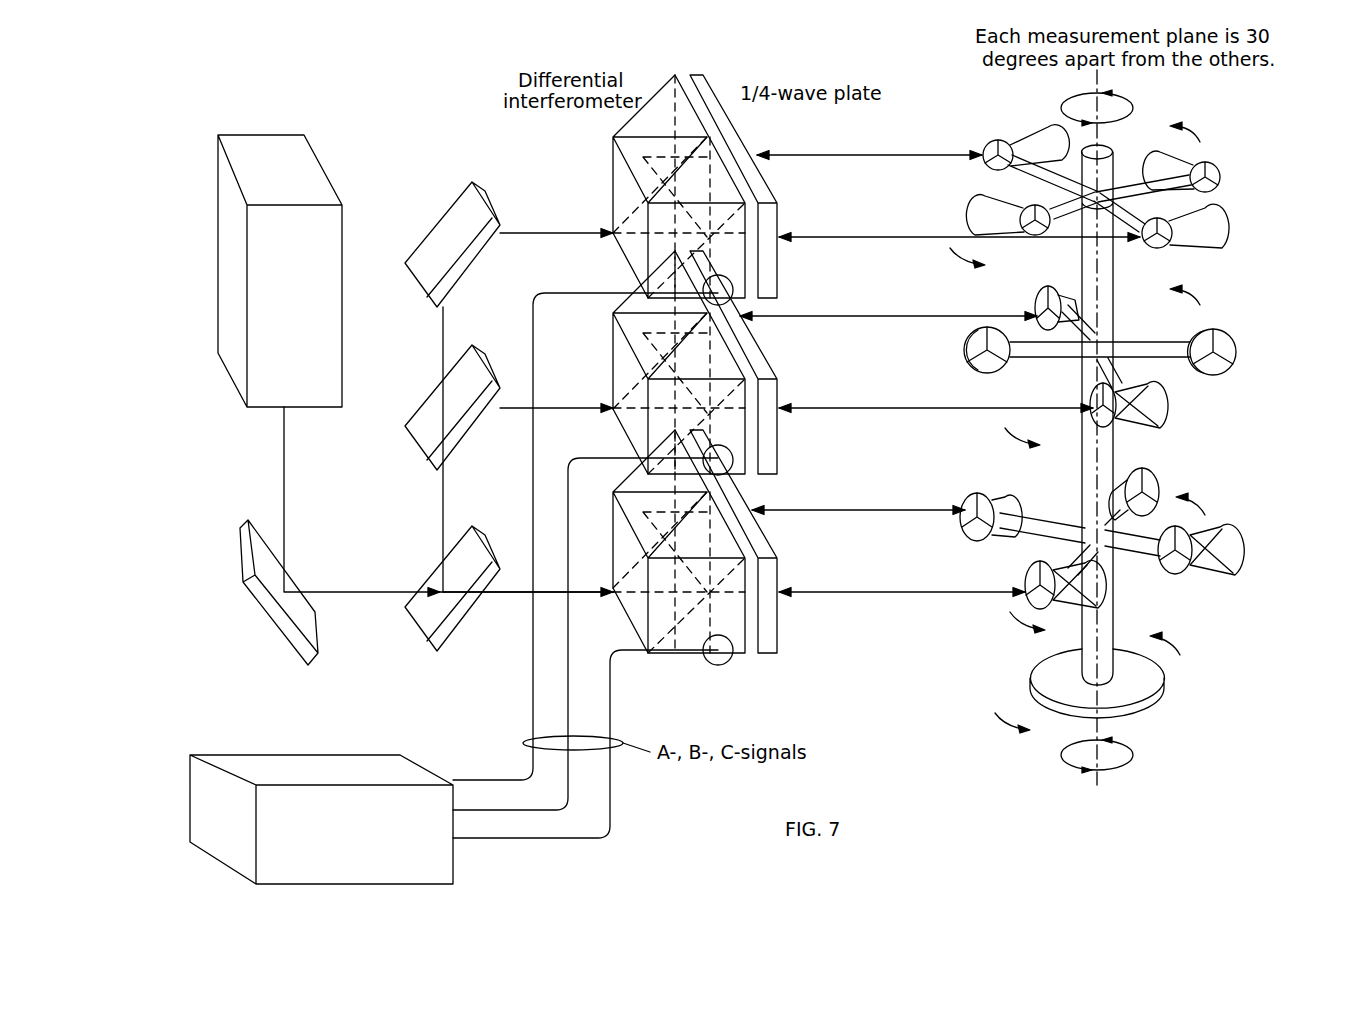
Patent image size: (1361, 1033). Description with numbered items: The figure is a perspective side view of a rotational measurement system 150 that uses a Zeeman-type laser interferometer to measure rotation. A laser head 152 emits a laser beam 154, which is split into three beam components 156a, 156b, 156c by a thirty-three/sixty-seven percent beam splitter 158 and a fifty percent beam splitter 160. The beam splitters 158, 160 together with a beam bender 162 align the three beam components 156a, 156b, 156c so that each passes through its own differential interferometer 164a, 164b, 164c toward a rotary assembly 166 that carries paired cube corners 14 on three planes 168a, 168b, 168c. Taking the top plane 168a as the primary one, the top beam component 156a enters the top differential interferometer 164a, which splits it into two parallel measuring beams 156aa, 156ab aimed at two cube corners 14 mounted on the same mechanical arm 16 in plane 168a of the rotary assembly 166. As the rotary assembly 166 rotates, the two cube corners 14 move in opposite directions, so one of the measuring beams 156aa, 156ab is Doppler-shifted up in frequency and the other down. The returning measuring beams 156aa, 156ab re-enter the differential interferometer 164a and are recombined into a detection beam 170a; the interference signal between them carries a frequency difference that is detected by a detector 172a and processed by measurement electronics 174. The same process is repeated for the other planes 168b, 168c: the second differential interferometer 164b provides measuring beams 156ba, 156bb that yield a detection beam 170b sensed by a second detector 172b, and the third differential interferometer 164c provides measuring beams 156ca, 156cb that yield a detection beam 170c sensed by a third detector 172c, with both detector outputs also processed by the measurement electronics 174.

The cube corner 14 is at (1210, 160).
The mechanical arm 16 is at (1131, 185).
The rotational measurement system 150 is at (1222, 818).
The laser head 152 is at (308, 310).
The laser beam 154 is at (283, 464).
The beam component 156a is at (592, 234).
The measuring beam 156aa is at (851, 157).
The measuring beam 156ab is at (850, 235).
The beam component 156b is at (592, 409).
The measuring beam 156ba is at (851, 318).
The measuring beam 156bb is at (850, 406).
The beam component 156c is at (513, 593).
The measuring beam 156ca is at (851, 512).
The measuring beam 156cb is at (850, 590).
The 33/67% beam splitter 158 is at (484, 566).
The 50% beam splitter 160 is at (466, 411).
The beam bender 162 is at (460, 249).
The differential interferometer 164a is at (610, 181).
The differential interferometer 164b is at (642, 362).
The differential interferometer 164c is at (741, 552).
The rotary assembly 166 is at (1147, 695).
The plane 168a is at (1137, 189).
The plane 168b is at (1245, 395).
The plane 168c is at (1243, 520).
The detection beam 170a is at (705, 264).
The detection beam 170b is at (720, 249).
The detection beam 170c is at (701, 562).
The detector 172a is at (733, 304).
The detector 172b is at (740, 475).
The detector 172c is at (718, 666).
The measurement electronics 174 is at (362, 837).